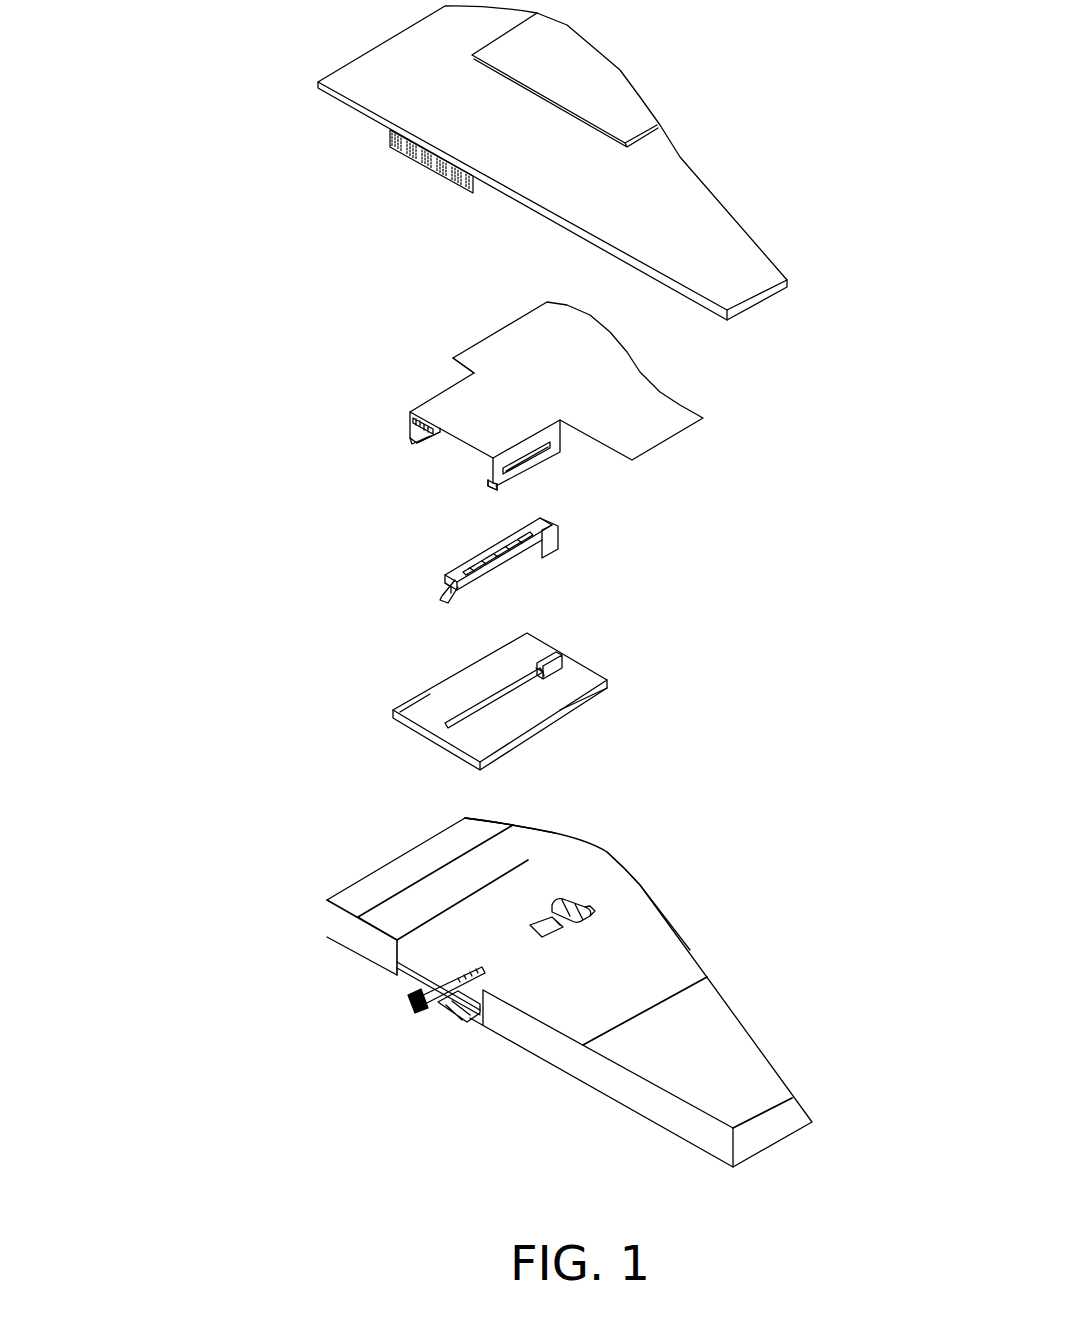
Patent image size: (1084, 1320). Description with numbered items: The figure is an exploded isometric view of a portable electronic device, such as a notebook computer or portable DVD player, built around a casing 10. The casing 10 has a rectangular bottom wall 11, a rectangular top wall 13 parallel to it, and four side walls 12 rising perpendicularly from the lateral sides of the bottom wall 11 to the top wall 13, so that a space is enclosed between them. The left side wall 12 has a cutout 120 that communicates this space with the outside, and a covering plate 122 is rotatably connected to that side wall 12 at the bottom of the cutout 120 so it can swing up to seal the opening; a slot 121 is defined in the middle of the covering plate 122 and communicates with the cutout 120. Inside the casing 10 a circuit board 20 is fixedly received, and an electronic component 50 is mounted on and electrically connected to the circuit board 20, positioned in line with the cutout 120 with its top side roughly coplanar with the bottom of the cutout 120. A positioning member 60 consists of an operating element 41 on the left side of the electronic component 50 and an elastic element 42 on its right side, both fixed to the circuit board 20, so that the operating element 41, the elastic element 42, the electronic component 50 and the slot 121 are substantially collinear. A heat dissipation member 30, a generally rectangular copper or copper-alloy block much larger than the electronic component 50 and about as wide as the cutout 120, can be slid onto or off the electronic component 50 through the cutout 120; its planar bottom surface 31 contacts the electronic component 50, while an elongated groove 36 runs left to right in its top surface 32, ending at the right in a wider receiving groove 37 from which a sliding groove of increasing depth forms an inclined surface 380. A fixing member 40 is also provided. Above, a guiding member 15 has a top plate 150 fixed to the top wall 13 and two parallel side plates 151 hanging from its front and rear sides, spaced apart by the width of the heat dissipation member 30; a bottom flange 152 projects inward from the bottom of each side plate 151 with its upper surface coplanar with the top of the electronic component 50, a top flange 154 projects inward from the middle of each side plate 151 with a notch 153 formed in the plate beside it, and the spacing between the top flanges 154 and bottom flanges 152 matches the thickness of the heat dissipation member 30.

The casing 10 is at (218, 222).
The bottom wall 11 is at (397, 910).
The side walls 12 is at (420, 858).
The top wall 13 is at (397, 98).
The guiding member 15 is at (480, 404).
The top plate 150 is at (437, 408).
The side plates 151 is at (412, 427).
The bottom flange 152 is at (435, 447).
The notch 153 is at (547, 450).
The top flange 154 is at (420, 443).
The circuit board 20 is at (650, 978).
The heat dissipation member 30 is at (585, 648).
The bottom surface 31 is at (577, 713).
The top surface 32 is at (422, 705).
The elongated groove 36 is at (495, 700).
The receiving groove 37 is at (543, 667).
The inclined surface 380 is at (557, 660).
The fixing member 40 is at (578, 528).
The operating element 41 is at (480, 962).
The elastic element 42 is at (575, 885).
The electronic component 50 is at (560, 936).
The positioning member 60 is at (687, 830).
The cutout 120 is at (466, 1002).
The slot 121 is at (432, 1000).
The covering plate 122 is at (392, 980).